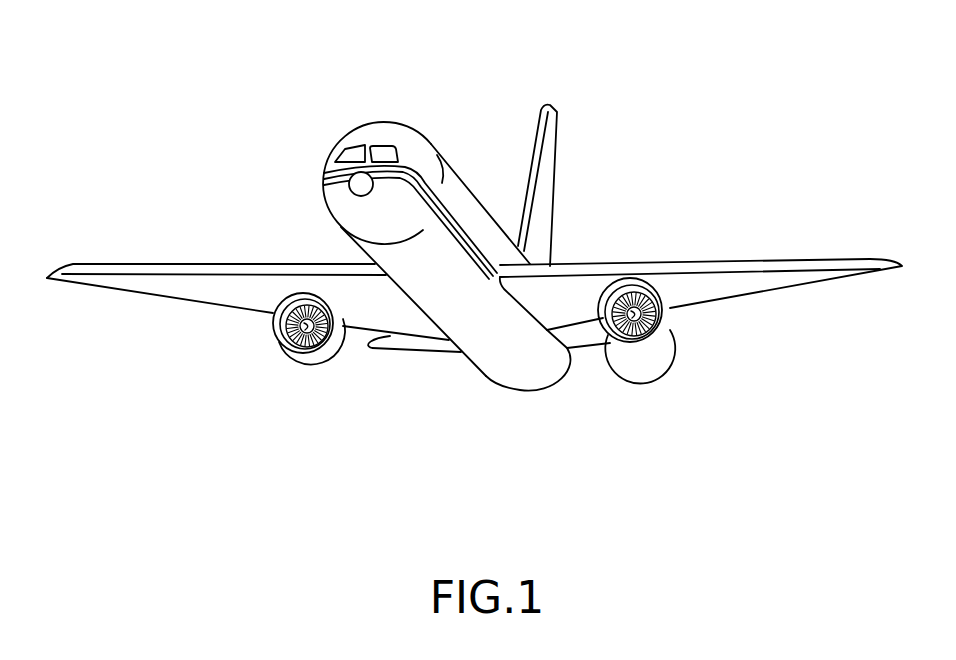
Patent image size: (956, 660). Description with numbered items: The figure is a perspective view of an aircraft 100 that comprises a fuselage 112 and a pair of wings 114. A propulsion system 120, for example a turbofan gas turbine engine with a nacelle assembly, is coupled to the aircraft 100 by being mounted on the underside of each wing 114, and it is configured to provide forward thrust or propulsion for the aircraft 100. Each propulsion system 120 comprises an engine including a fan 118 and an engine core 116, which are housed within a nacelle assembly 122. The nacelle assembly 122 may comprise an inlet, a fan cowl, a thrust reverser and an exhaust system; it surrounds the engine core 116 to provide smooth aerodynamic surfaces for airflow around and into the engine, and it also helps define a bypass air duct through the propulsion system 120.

The aircraft 100 is at (239, 112).
The fuselage 112 is at (457, 188).
The wings 114 is at (144, 263).
The engine core 116 is at (328, 353).
The fan 118 is at (276, 338).
The propulsion system 120 is at (312, 360).
The nacelle assembly 122 is at (337, 341).